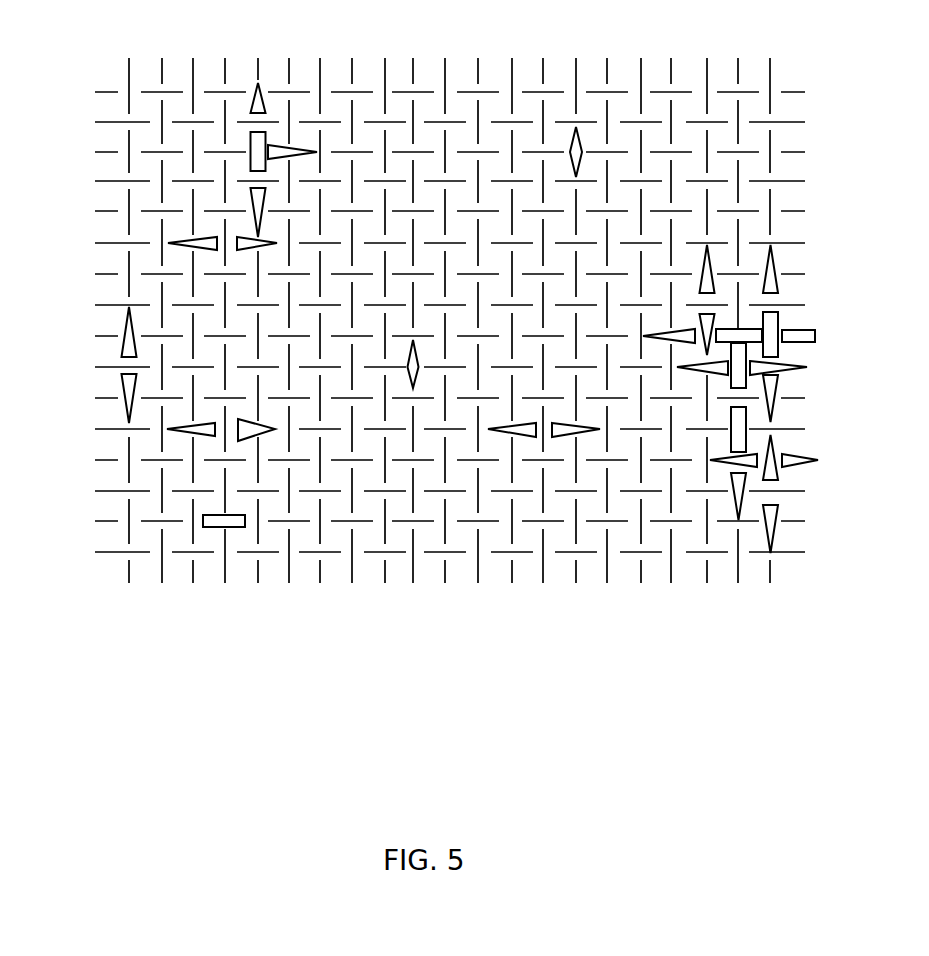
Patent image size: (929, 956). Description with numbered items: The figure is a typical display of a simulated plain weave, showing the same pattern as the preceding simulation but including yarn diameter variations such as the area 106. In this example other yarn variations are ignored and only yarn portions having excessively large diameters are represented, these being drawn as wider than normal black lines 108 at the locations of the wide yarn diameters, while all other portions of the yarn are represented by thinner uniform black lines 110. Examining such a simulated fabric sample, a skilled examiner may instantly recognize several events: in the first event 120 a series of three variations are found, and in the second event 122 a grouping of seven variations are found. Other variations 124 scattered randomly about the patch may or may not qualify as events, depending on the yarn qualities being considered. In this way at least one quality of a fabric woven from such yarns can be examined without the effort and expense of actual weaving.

The area of yarn diameter variation 106 is at (215, 527).
The wider than normal black lines 108 is at (532, 437).
The thinner uniform black lines 110 is at (607, 576).
The first event 120 is at (248, 170).
The second event 122 is at (779, 322).
The other variations 124 is at (580, 140).